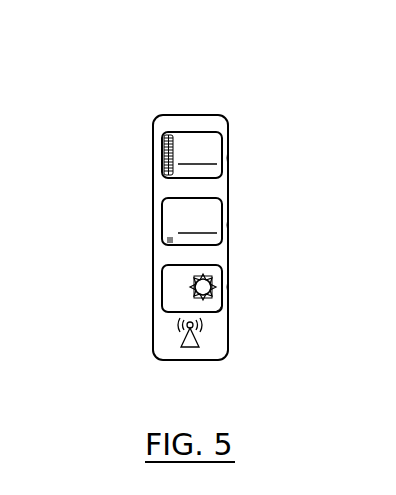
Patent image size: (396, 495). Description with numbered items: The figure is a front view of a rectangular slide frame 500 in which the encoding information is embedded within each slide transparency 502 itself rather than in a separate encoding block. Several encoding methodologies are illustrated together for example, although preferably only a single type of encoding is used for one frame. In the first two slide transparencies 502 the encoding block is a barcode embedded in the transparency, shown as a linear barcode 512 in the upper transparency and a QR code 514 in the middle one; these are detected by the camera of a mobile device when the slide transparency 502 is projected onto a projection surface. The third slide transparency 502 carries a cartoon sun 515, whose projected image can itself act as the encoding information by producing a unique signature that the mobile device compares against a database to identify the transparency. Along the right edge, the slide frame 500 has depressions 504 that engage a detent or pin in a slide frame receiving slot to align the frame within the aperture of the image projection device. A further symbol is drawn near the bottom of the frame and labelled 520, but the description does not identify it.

The rectangular slide frame 500 is at (195, 104).
The slide transparency 502 is at (173, 285).
The depressions 504 is at (229, 156).
The linear barcode 512 is at (167, 158).
The QR code 514 is at (167, 240).
The cartoon sun 515 is at (221, 304).
The antenna 520 is at (169, 351).